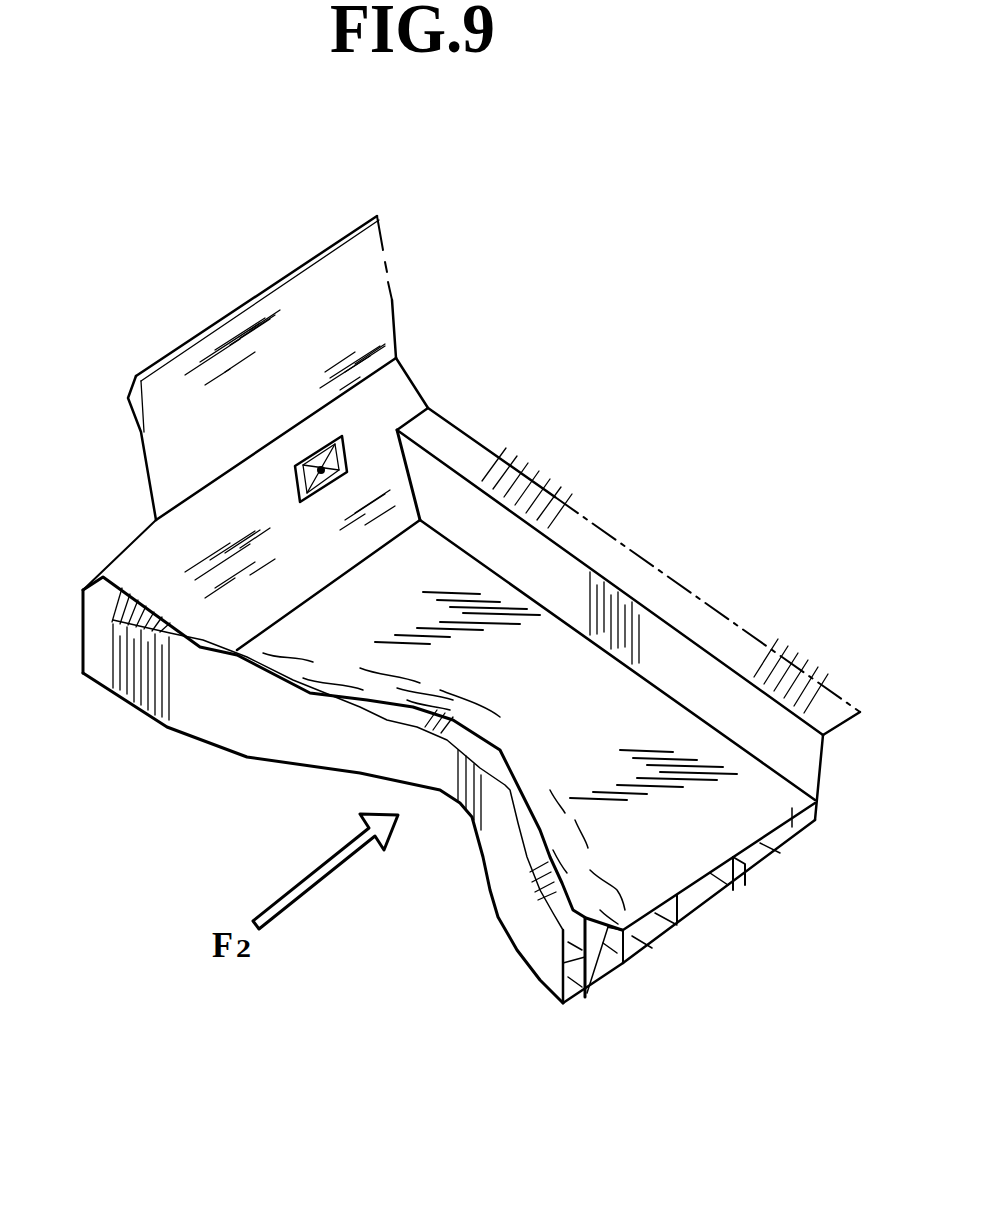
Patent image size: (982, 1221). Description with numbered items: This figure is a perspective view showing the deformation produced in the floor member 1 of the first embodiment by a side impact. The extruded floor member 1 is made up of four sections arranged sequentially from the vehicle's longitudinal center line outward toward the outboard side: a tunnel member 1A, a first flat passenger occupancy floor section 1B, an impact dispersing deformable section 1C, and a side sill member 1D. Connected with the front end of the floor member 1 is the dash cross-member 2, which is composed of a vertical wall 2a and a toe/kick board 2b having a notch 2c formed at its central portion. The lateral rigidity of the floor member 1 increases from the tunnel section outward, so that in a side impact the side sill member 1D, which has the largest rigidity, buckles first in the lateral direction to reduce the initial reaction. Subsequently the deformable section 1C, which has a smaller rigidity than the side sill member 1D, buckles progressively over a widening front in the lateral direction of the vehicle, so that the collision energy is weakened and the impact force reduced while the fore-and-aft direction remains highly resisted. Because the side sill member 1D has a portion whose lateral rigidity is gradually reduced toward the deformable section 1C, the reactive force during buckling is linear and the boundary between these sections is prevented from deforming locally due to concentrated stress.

The floor member 1 is at (558, 503).
The tunnel member 1A is at (833, 712).
The first flat passenger occupancy floor section 1B is at (785, 806).
The impact dispersing deformable section 1C is at (690, 868).
The side sill member 1D is at (530, 940).
The dash cross-member 2 is at (130, 533).
The vertical wall 2a is at (368, 262).
The toe/kick board 2b is at (383, 380).
The notch 2c is at (408, 470).